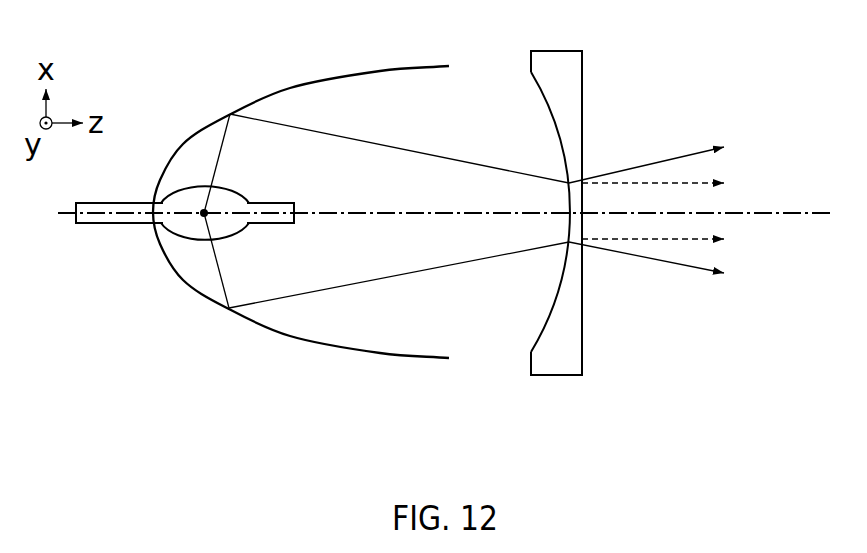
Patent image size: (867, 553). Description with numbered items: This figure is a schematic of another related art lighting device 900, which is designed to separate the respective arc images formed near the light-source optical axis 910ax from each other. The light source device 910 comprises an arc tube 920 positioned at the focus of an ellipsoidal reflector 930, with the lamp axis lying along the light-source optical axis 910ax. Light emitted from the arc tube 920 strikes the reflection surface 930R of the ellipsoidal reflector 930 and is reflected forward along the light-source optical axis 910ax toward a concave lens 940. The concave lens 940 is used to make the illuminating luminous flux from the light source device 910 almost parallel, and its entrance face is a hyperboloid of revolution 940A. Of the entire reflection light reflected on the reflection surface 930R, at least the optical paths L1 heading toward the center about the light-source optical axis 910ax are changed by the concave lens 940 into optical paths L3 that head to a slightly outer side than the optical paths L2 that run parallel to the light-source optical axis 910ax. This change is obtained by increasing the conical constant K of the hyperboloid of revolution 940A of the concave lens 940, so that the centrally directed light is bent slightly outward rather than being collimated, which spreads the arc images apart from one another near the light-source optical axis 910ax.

The lighting device 900 is at (431, 252).
The light source device 910 is at (262, 269).
The light-source optical axis 910ax is at (805, 212).
The arc tube 920 is at (207, 240).
The ellipsoidal reflector 930 is at (301, 247).
The reflection surface 930R is at (284, 99).
The concave lens 940 is at (505, 229).
The hyperboloid of revolution 940A is at (544, 92).
The optical paths heading toward the center L1 is at (440, 306).
The optical paths parallel to the light-source optical axis L2 is at (684, 211).
The optical paths heading to a slightly outer side L3 is at (674, 307).